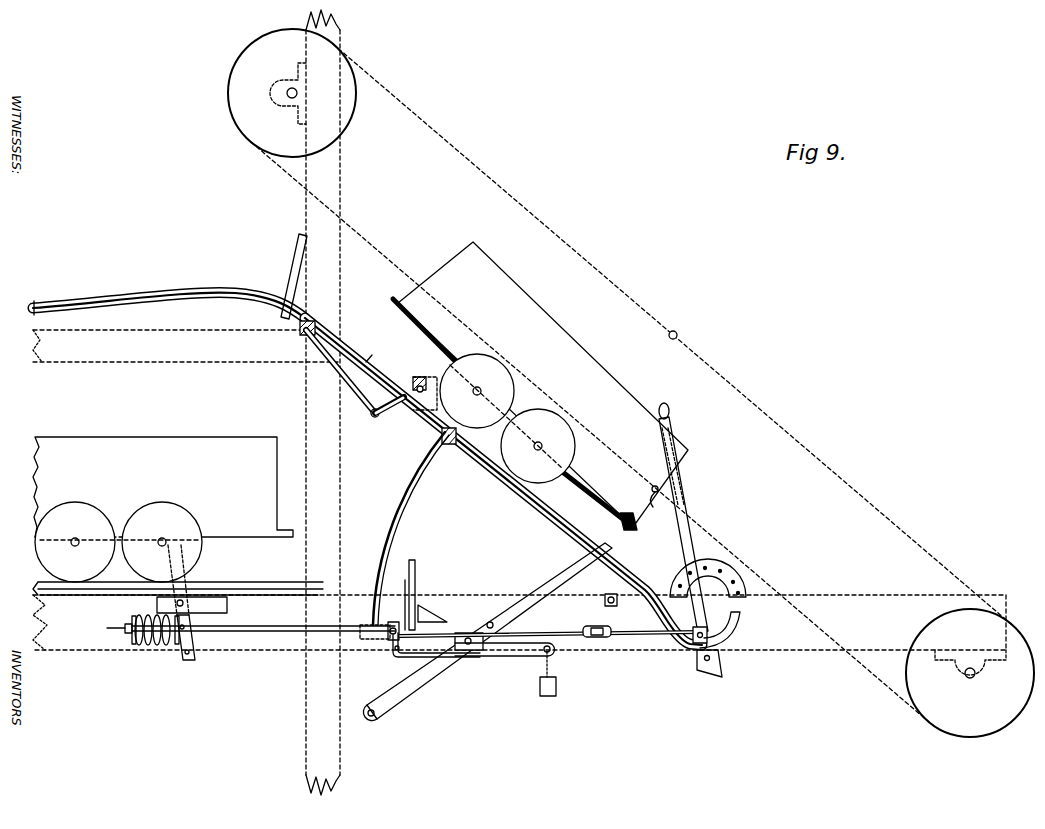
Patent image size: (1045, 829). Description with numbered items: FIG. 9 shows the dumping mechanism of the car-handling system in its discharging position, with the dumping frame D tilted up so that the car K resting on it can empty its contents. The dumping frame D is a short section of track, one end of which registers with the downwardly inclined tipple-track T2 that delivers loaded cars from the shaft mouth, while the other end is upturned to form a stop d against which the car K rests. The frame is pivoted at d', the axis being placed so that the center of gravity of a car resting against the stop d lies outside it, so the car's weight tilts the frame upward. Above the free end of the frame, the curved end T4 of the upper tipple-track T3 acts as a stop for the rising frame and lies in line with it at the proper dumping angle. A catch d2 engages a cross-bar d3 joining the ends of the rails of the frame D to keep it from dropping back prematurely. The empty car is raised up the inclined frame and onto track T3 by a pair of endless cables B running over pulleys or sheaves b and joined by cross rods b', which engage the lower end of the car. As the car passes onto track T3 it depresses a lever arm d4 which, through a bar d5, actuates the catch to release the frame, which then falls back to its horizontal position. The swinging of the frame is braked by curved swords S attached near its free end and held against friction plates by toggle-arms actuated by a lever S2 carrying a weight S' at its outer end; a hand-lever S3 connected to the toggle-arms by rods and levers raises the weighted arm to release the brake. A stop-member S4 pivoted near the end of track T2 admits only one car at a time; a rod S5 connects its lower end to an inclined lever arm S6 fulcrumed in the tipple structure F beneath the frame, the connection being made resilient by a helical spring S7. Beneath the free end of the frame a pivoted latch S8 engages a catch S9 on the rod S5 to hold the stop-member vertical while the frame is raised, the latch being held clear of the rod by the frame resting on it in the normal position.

The tipple structure F is at (341, 160).
The endless cables B is at (806, 451).
The pulleys or sheaves b is at (631, 383).
The cross rods b' is at (677, 425).
The car K is at (360, 412).
The dumping frame D is at (501, 481).
The tipple-track T2 is at (42, 591).
The upper tipple-track T3 is at (170, 292).
The end of upper tipple-track T4 is at (373, 357).
The stop d is at (715, 618).
The pivot d' is at (597, 607).
The catch d2 is at (406, 408).
The cross-bar d3 is at (400, 420).
The lever arm d4 is at (300, 270).
The bar d5 is at (352, 378).
The curved swords S is at (404, 535).
The weight S' is at (560, 679).
The weighted lever S2 is at (510, 660).
The hand-lever S3 is at (690, 496).
The stop-member S4 is at (185, 583).
The rod S5 is at (466, 660).
The inclined lever arm S6 is at (560, 572).
The helical spring S7 is at (146, 650).
The pivoted latch S8 is at (416, 566).
The catch S9 is at (420, 612).